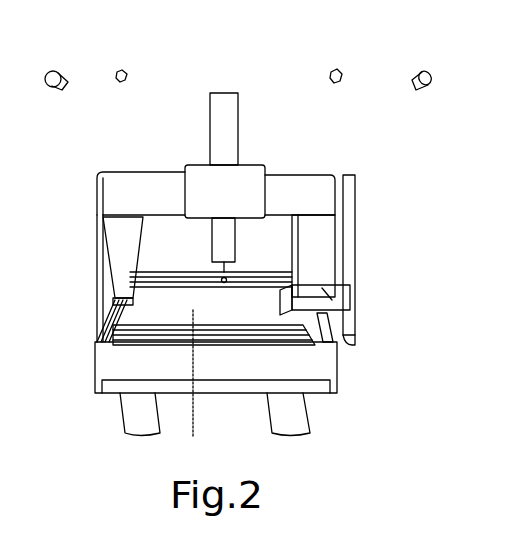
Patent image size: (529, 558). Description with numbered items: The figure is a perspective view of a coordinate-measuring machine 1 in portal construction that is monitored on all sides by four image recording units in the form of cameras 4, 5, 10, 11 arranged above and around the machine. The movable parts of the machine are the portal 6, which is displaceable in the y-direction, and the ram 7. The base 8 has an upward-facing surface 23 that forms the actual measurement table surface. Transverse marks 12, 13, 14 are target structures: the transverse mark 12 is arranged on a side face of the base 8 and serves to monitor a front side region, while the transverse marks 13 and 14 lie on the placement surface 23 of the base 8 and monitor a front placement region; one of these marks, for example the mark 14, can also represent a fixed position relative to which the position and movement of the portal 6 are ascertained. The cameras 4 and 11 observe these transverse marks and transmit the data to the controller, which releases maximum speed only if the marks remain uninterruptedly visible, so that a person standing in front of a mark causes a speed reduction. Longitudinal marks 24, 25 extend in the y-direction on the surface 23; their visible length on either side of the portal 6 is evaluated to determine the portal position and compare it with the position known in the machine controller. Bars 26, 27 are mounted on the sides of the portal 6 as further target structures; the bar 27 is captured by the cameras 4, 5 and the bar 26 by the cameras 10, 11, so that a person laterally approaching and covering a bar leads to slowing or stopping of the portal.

The coordinate-measuring machine 1 is at (88, 161).
The image recording unit 4 is at (51, 70).
The image recording unit 5 is at (120, 70).
The portal 6 is at (318, 173).
The ram 7 is at (224, 92).
The base 8 is at (93, 365).
The camera 10 is at (337, 68).
The camera 11 is at (423, 69).
The transverse mark 12 is at (323, 383).
The transverse mark 13 is at (312, 345).
The transverse mark 14 is at (262, 335).
The surface 23 is at (191, 388).
The longitudinal mark 24 is at (352, 337).
The longitudinal mark 25 is at (96, 326).
The bar 26 is at (355, 222).
The bar 27 is at (98, 272).